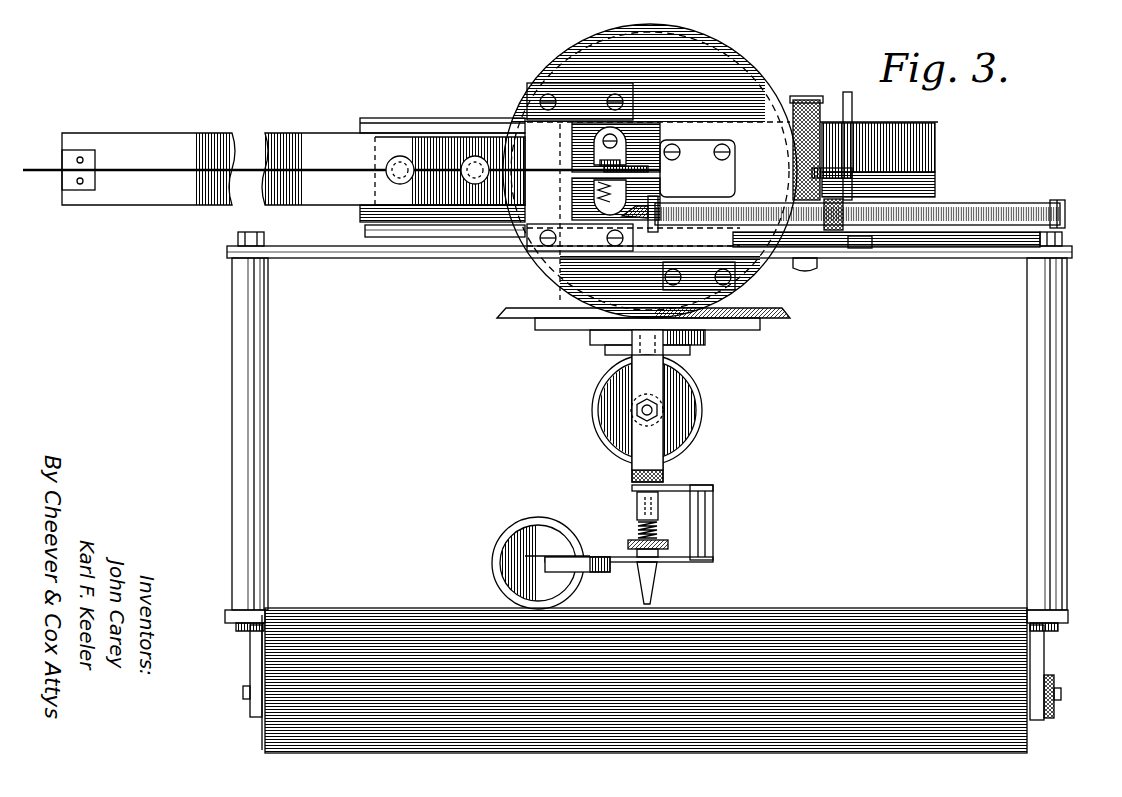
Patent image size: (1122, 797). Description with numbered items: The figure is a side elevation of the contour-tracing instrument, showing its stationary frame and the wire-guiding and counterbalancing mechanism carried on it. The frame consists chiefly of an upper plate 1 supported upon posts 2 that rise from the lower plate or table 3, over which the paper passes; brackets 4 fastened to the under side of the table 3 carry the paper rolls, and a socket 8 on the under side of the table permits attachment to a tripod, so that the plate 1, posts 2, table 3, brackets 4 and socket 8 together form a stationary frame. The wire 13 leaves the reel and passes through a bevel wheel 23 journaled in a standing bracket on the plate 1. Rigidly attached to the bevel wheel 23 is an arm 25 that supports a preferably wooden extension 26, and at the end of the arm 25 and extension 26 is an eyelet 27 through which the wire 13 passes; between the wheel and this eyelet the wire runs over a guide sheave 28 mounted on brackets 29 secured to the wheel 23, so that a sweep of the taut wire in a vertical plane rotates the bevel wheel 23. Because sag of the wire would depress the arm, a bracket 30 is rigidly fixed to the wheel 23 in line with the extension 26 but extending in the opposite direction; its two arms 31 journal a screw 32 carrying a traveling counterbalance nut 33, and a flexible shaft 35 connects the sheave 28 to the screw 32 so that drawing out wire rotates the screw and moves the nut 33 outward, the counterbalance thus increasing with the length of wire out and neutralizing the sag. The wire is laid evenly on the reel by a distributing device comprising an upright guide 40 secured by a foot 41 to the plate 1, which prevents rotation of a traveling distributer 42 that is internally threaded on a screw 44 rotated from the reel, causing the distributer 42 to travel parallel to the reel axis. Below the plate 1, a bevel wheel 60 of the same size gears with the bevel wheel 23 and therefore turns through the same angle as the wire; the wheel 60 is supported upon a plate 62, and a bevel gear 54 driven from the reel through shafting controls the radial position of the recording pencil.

The plate 1 is at (333, 258).
The posts 2 is at (268, 392).
The lower plate or table 3 is at (1068, 616).
The brackets 4 is at (250, 658).
The socket 8 is at (700, 615).
The wire 13 is at (168, 172).
The bevel wheel 23 is at (752, 74).
The arm 25 is at (393, 133).
The extension 26 is at (222, 137).
The eyelet 27 is at (64, 182).
The guide sheave 28 is at (636, 166).
The brackets 29 is at (606, 138).
The bracket 30 is at (722, 176).
The arms 31 is at (1062, 206).
The screw 32 is at (1022, 206).
The traveling counterbalance nut 33 is at (834, 230).
The flexible shaft 35 is at (632, 210).
The upright guide 40 is at (850, 100).
The foot 41 is at (862, 249).
The traveling distributer 42 is at (842, 172).
The screw 44 is at (812, 92).
The bevel gear 54 is at (700, 418).
The bevel wheel 60 is at (790, 316).
The plate 62 is at (700, 334).